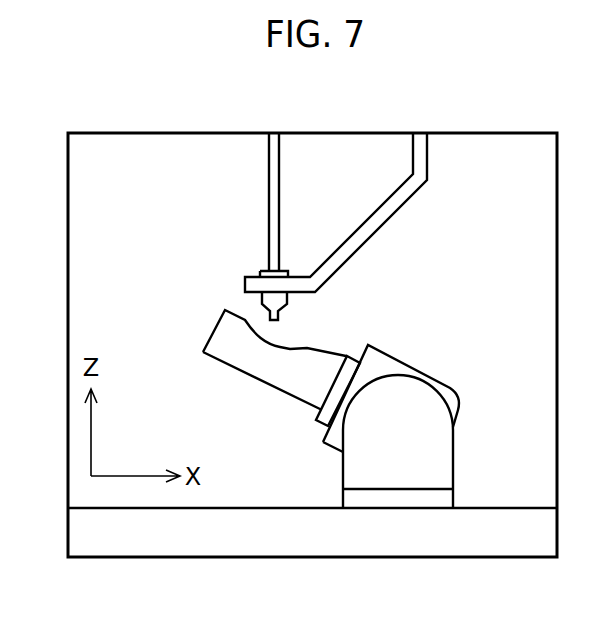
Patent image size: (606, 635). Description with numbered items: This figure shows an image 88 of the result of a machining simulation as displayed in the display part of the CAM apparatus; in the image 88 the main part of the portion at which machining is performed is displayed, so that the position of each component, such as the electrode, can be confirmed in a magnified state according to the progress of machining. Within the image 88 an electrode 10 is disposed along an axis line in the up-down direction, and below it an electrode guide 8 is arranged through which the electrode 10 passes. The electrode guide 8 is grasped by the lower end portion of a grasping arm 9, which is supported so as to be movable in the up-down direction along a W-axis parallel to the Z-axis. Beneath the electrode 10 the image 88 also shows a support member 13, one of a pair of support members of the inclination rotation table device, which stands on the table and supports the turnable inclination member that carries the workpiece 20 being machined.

The image 88 is at (530, 133).
The electrode 10 is at (272, 167).
The grasping arm 9 is at (427, 153).
The electrode guide 8 is at (273, 300).
The workpiece 20 is at (268, 365).
The support member 13 is at (409, 472).